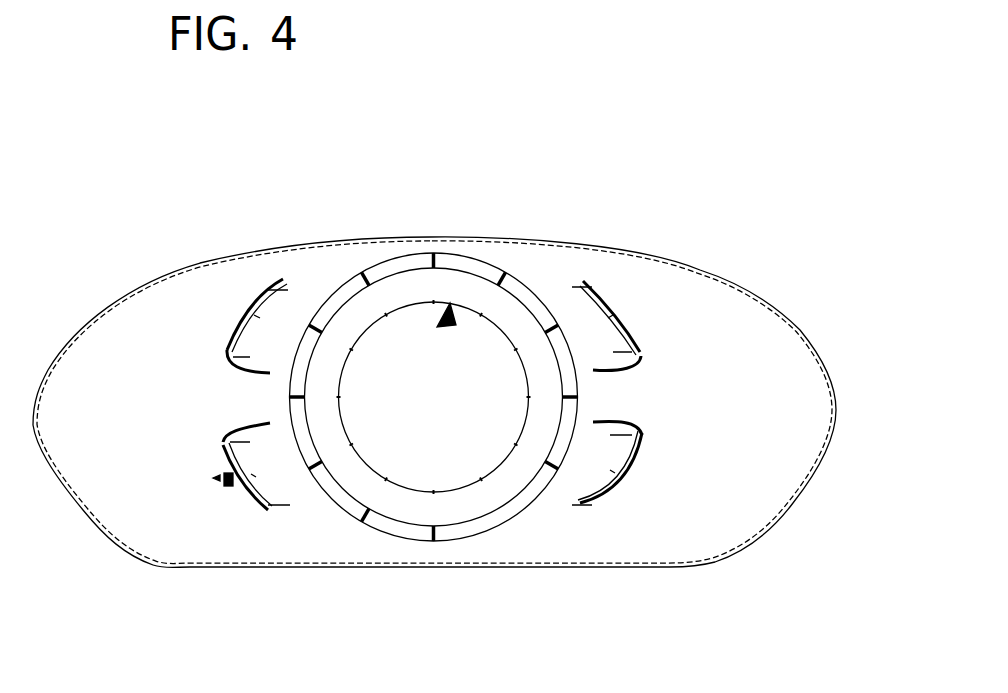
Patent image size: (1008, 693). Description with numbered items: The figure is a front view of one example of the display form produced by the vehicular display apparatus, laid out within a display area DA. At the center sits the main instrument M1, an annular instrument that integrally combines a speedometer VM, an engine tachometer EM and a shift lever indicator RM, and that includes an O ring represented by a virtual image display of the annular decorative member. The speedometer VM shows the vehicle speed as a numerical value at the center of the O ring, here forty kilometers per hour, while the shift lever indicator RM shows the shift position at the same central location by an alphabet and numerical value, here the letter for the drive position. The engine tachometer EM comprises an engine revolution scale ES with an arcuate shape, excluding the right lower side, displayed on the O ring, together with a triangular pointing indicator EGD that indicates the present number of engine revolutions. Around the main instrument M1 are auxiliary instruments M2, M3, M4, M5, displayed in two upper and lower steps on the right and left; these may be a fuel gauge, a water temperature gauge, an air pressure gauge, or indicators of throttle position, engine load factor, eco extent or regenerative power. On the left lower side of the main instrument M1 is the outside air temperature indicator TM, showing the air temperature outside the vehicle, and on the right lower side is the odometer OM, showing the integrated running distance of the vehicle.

The display area DA is at (826, 450).
The engine revolution scale ES is at (292, 383).
The engine tachometer EM is at (312, 440).
The main instrument M1 is at (518, 268).
The pointing indicator EGD is at (455, 302).
The speedometer VM is at (453, 403).
The shift lever indicator RM is at (440, 440).
The auxiliary instrument M4 is at (231, 308).
The auxiliary instrument M5 is at (240, 523).
The auxiliary instrument M2 is at (628, 308).
The auxiliary instrument M3 is at (625, 493).
The outside air temperature indicator TM is at (173, 536).
The odometer OM is at (702, 533).